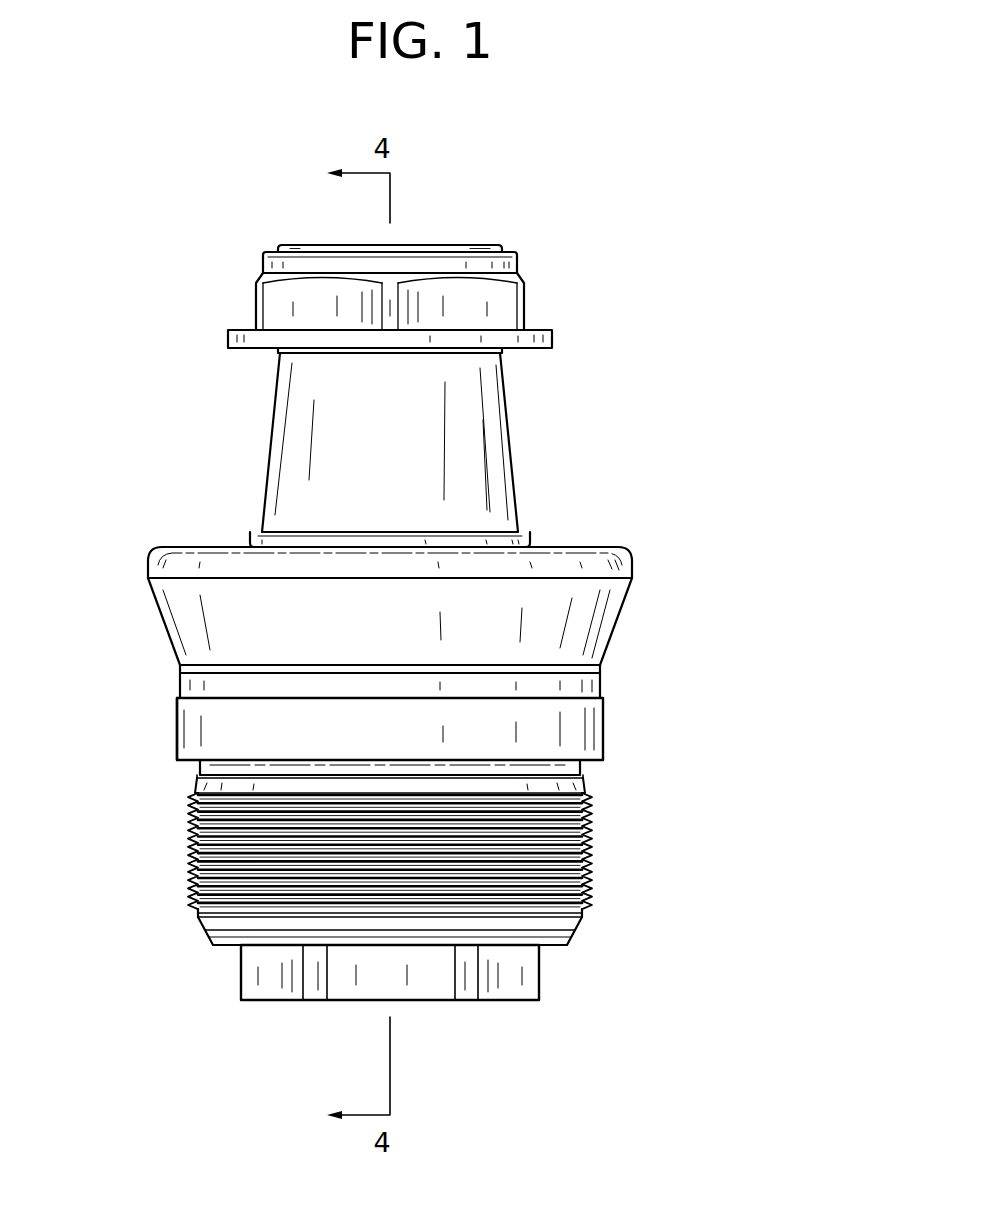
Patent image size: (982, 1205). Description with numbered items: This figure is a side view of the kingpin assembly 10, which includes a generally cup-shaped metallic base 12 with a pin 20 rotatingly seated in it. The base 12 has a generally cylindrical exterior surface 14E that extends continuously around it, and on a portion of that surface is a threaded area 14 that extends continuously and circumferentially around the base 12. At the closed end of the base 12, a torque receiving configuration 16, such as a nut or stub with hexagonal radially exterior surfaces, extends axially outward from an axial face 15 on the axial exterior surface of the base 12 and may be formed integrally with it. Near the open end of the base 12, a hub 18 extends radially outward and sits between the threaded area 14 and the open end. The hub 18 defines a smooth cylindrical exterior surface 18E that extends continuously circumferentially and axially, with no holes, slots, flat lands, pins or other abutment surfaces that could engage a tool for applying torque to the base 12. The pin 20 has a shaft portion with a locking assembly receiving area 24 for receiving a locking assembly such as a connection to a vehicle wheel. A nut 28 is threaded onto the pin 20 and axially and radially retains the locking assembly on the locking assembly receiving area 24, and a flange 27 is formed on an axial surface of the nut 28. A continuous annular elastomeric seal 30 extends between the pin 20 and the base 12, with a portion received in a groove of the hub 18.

The kingpin assembly 10 is at (693, 221).
The base 12 is at (676, 990).
The threaded area 14 is at (610, 773).
The exterior surface 14E is at (160, 852).
The axial face 15 is at (228, 947).
The torque receiving configuration 16 is at (556, 980).
The hub 18 is at (603, 727).
The smooth cylindrical exterior surface 18E is at (265, 734).
The pin 20 is at (238, 445).
The locking assembly receiving area 24 is at (590, 347).
The flange 27 is at (552, 337).
The nut 28 is at (503, 298).
The seal 30 is at (660, 562).